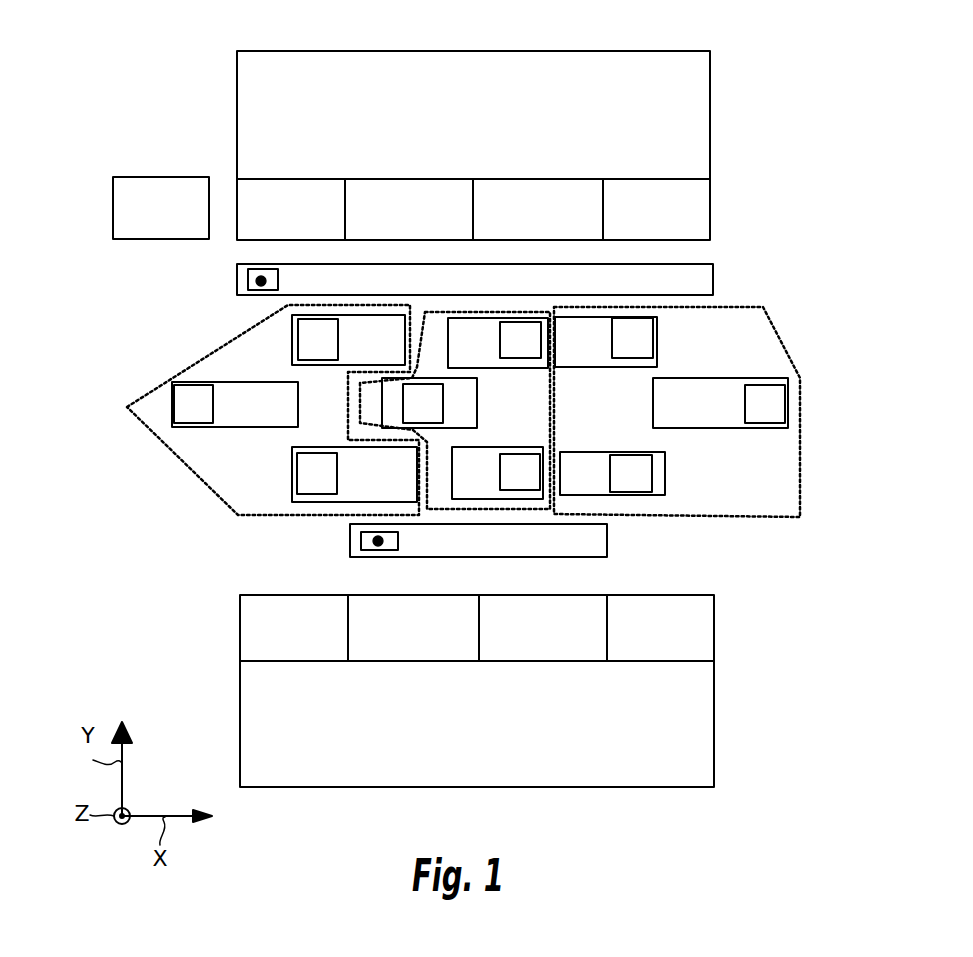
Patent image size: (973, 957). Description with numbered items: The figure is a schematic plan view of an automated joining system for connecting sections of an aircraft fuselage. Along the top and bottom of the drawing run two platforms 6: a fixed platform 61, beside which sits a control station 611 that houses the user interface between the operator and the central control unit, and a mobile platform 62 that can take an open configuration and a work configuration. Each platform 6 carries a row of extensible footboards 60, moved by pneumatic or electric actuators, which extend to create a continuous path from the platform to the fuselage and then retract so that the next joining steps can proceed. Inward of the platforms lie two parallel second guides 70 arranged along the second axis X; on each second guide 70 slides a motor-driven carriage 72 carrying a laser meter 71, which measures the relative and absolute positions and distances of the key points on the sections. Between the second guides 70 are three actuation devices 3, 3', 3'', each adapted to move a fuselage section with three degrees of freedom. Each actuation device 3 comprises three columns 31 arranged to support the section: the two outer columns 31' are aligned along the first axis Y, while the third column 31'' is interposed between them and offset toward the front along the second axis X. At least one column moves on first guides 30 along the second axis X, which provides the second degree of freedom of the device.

The platform 6 is at (483, 464).
The fixed platform 61 is at (255, 95).
The control station 611 is at (135, 183).
The mobile platform 62 is at (583, 767).
The extensible footboards 60 is at (248, 223).
The second guide 70 is at (466, 422).
The laser meter 71 is at (238, 276).
The carriage 72 is at (263, 290).
The actuation device 3 is at (455, 304).
The actuation device 3' is at (273, 419).
The actuation device 3'' is at (713, 412).
The first guides 30 is at (580, 357).
The columns 31 is at (473, 406).
The outer columns 31' is at (683, 405).
The third column 31'' is at (841, 427).